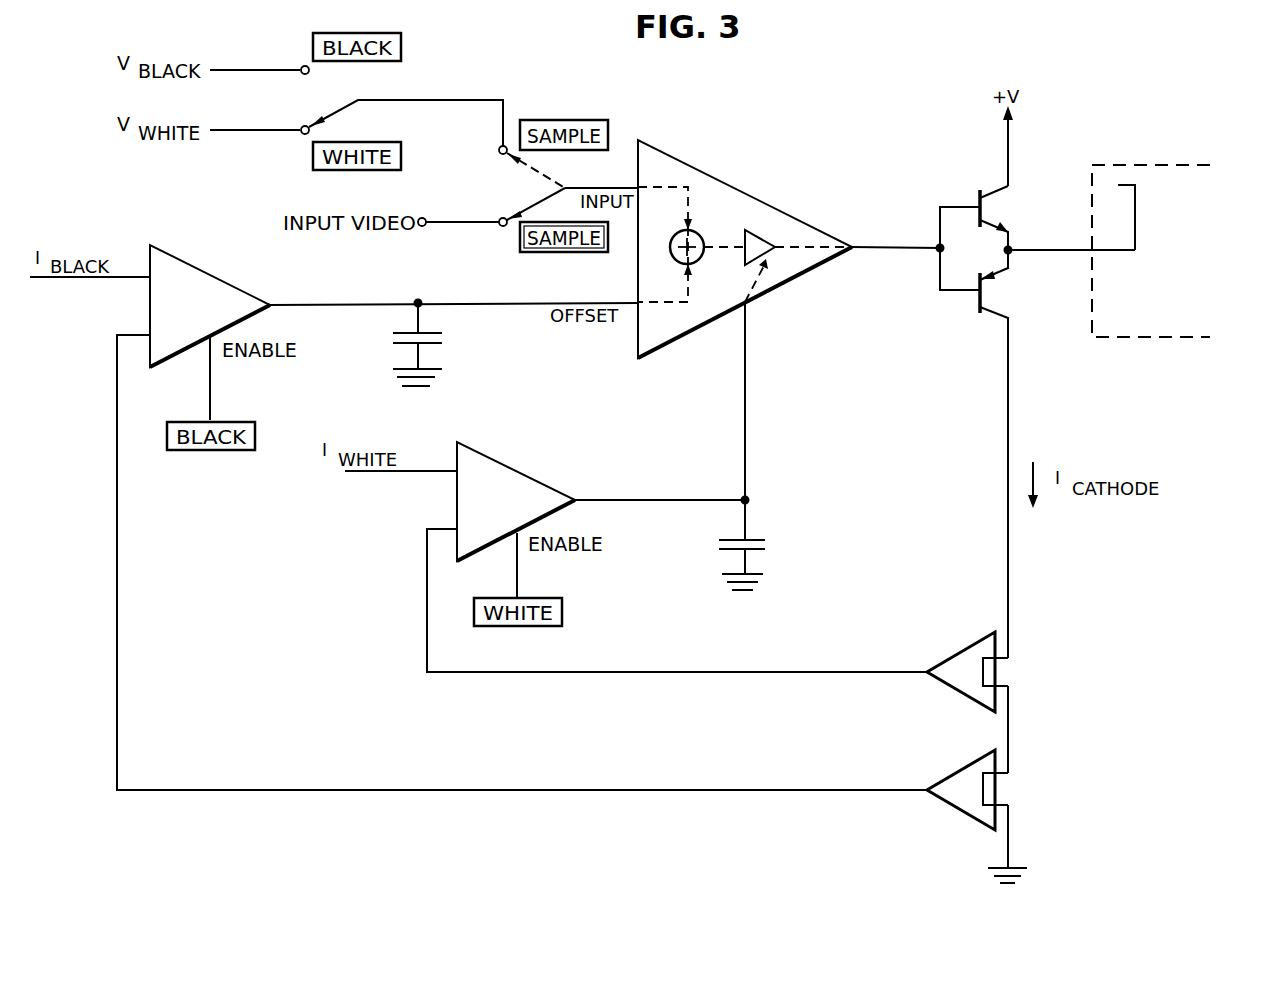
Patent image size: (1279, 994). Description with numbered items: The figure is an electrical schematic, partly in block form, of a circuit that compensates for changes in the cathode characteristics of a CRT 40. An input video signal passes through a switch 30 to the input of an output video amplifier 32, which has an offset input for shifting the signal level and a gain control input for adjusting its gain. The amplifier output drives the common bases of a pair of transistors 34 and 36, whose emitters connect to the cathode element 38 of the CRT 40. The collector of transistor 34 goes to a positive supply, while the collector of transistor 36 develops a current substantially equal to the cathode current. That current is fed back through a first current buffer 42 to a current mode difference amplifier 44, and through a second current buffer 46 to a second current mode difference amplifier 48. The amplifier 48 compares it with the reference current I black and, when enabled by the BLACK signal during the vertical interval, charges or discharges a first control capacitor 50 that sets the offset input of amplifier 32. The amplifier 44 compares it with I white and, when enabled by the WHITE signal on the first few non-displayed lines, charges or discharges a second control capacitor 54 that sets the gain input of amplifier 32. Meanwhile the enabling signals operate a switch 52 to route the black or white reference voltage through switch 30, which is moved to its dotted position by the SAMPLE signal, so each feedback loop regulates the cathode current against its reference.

The switch 30 is at (540, 200).
The output video amplifier 32 is at (725, 184).
The transistor 34 is at (1038, 226).
The transistor 36 is at (1038, 316).
The cathode element 38 is at (1035, 251).
The CRT 40 is at (1093, 338).
The first current buffer 42 is at (966, 650).
The current mode difference amplifier 44 is at (512, 466).
The second current buffer 46 is at (966, 768).
The second current mode difference amplifier 48 is at (208, 271).
The first control capacitor 50 is at (427, 333).
The switch 52 is at (345, 100).
The second control capacitor 54 is at (749, 539).